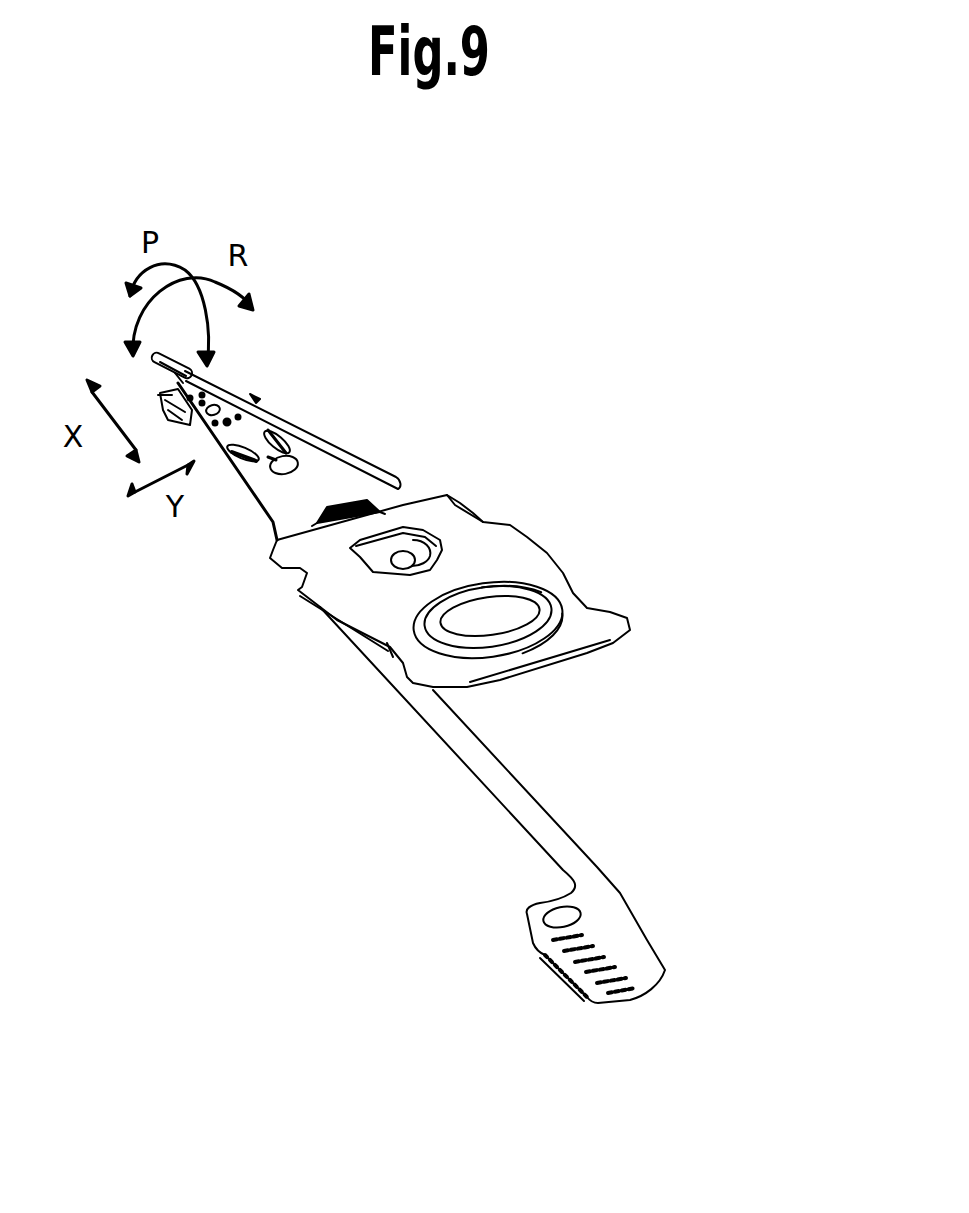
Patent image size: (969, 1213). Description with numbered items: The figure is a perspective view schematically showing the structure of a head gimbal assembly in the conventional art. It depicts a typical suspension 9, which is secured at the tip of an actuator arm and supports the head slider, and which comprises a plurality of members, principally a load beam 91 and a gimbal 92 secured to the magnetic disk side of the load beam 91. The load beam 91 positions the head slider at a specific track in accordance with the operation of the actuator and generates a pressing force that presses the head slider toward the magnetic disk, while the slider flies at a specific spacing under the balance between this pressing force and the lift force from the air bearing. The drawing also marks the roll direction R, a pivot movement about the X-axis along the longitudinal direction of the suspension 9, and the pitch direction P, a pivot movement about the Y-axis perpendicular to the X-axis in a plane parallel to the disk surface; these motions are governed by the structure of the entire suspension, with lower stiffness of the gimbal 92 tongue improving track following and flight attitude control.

The suspension 9 is at (425, 370).
The load beam 91 is at (383, 463).
The gimbal 92 is at (250, 392).